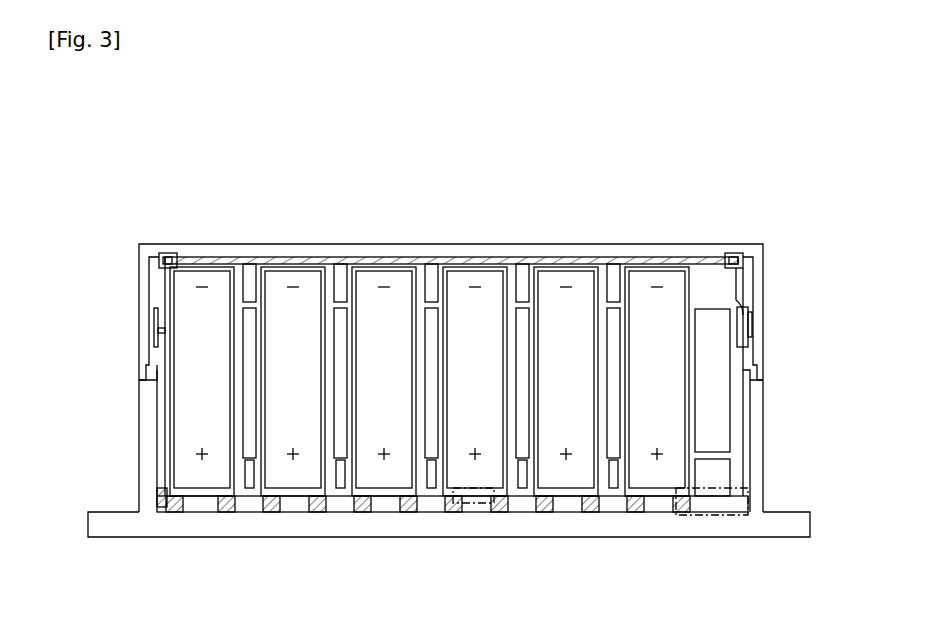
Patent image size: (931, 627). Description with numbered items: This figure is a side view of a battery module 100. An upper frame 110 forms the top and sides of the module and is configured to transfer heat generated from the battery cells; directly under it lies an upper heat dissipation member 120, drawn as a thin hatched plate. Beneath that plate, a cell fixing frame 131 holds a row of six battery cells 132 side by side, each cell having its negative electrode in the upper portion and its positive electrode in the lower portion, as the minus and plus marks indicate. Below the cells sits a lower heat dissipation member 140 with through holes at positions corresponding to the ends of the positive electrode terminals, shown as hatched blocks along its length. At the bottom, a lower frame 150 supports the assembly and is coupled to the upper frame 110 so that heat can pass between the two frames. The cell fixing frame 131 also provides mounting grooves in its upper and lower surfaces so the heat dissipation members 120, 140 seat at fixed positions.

The battery module 100 is at (162, 147).
The upper frame 110 is at (757, 330).
The upper heat dissipation member 120 is at (521, 257).
The cell fixing frame 131 is at (718, 283).
The battery cells 132 is at (672, 412).
The lower heat dissipation member 140 is at (590, 512).
The lower frame 150 is at (760, 478).